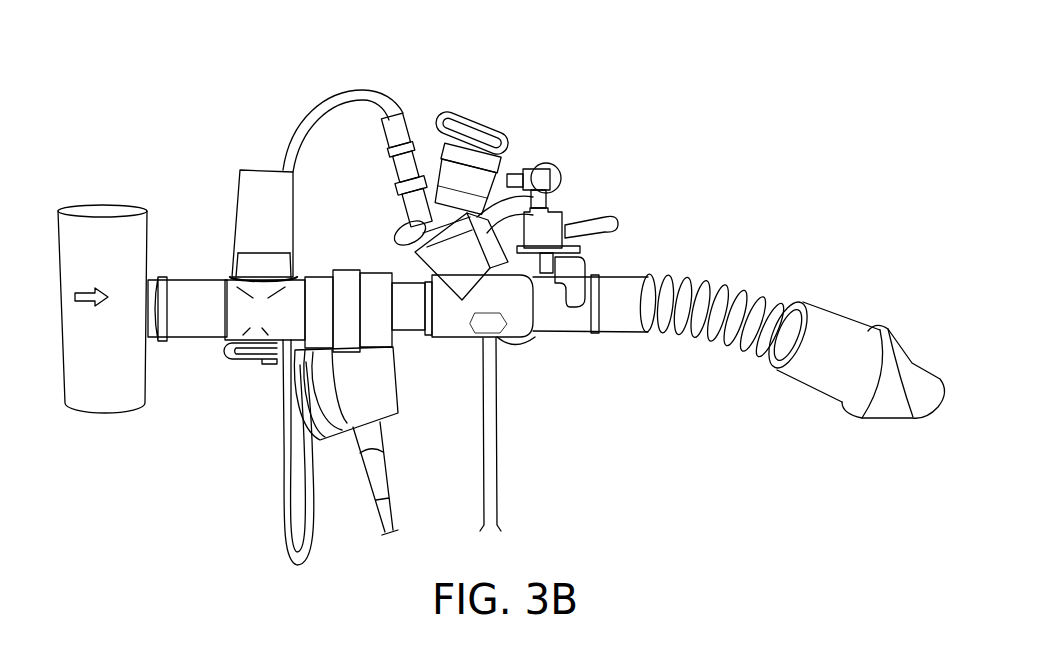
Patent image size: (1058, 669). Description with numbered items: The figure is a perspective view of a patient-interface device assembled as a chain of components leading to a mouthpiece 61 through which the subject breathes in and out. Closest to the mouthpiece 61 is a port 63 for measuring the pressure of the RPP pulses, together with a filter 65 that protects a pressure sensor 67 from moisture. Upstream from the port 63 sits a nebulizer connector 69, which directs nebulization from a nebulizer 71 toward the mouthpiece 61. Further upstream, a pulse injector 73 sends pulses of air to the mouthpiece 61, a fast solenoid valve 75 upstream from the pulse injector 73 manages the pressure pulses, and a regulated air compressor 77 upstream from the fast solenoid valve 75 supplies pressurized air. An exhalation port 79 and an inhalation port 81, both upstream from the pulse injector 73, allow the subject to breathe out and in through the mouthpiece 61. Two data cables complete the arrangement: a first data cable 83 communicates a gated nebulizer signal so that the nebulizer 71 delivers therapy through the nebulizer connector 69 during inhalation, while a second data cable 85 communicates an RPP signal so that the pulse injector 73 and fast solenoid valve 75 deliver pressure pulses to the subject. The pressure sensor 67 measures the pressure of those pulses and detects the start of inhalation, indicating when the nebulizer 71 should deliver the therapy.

The mouthpiece 61 is at (837, 312).
The port 63 is at (567, 320).
The filter 65 is at (617, 218).
The pressure sensor 67 is at (563, 173).
The nebulizer connector 69 is at (455, 338).
The nebulizer 71 is at (490, 137).
The pulse injector 73 is at (345, 268).
The fast solenoid valve 75 is at (377, 397).
The regulated air compressor 77 is at (387, 515).
The exhalation port 79 is at (237, 203).
The inhalation port 81 is at (105, 417).
The first data cable 83 is at (327, 95).
The second data cable 85 is at (285, 518).